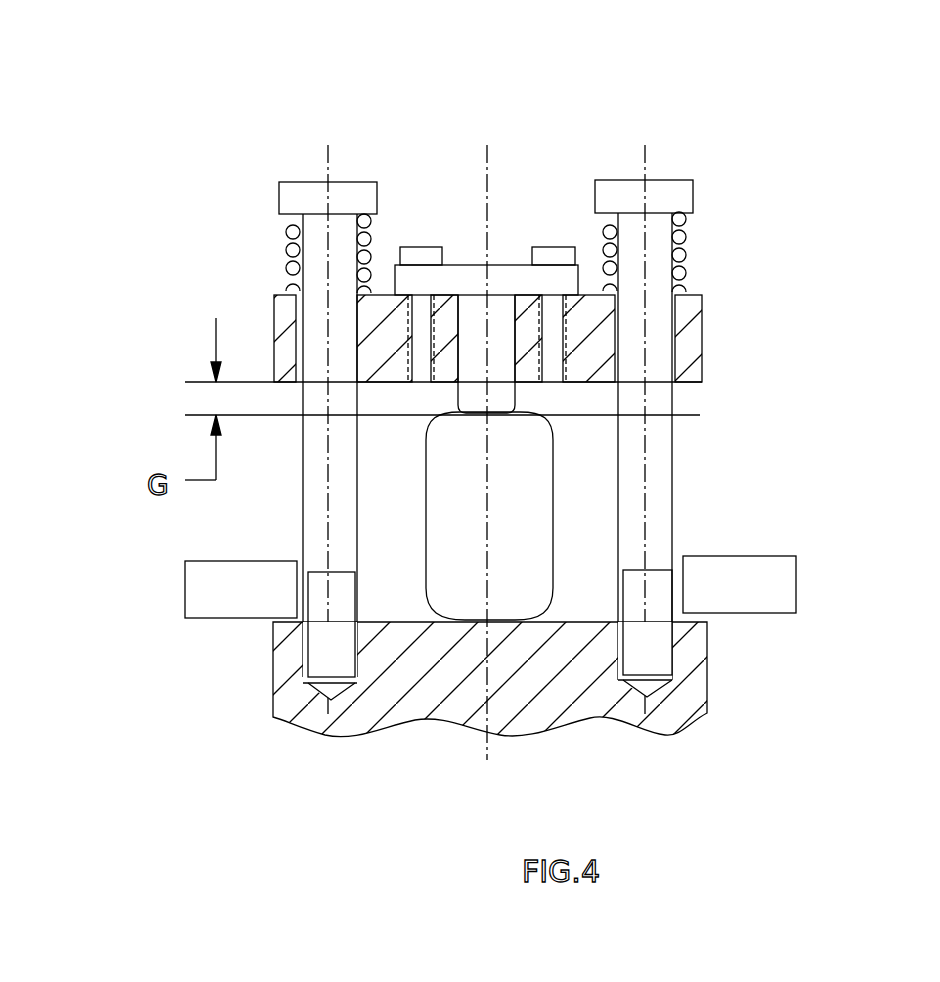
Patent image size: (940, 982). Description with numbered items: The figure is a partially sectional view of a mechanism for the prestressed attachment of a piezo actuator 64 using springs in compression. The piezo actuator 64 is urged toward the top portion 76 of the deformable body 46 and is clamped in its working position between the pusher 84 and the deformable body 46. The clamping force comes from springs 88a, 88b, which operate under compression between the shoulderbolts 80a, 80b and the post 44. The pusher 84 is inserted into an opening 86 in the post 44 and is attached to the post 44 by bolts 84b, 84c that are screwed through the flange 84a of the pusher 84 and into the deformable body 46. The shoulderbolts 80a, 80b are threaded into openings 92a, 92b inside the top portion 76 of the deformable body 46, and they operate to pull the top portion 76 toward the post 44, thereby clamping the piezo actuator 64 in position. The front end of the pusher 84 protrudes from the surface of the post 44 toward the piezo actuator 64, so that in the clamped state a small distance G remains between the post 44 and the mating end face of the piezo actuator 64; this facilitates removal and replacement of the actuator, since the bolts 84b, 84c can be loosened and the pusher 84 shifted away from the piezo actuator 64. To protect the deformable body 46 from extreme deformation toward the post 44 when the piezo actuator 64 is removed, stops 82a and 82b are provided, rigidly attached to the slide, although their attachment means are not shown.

The post 44 is at (700, 300).
The pusher 84 is at (514, 161).
The flange 84a is at (558, 278).
The bolt 84b is at (415, 258).
The bolt 84c is at (546, 253).
The opening 86 is at (516, 348).
The piezo actuator 64 is at (530, 473).
The shoulderbolt 80a is at (662, 443).
The shoulderbolt 80b is at (318, 478).
The spring 88a is at (683, 253).
The spring 88b is at (290, 267).
The stop 82a is at (215, 603).
The stop 82b is at (775, 571).
The top portion 76 is at (453, 695).
The opening 92a is at (307, 655).
The opening 92b is at (675, 665).
The deformable body 46 is at (695, 806).